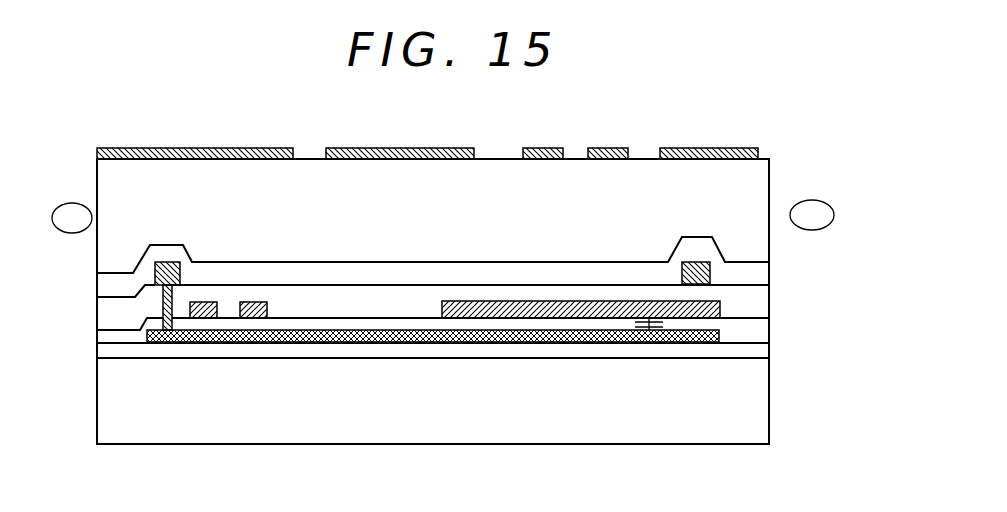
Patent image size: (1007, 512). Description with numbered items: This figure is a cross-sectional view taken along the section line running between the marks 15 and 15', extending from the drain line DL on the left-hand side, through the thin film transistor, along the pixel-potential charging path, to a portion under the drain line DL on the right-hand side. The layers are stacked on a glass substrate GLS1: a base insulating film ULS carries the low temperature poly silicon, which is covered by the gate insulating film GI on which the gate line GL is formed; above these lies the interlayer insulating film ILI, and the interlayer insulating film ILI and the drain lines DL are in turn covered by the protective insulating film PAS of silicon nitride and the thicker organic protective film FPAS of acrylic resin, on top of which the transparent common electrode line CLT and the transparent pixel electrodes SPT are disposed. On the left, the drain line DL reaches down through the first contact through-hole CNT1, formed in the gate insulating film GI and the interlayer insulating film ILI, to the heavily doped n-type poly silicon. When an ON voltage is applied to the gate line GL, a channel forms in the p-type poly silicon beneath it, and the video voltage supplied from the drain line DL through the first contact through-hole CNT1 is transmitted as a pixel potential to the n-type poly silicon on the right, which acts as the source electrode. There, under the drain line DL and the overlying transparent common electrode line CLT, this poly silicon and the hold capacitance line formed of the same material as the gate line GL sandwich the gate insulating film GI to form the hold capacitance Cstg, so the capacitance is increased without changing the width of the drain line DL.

The drain line DL is at (162, 262).
The first contact through-hole CNT1 is at (168, 240).
The gate line GL is at (253, 302).
The transparent common electrode line CLT is at (275, 150).
The transparent pixel electrode SPT is at (403, 148).
The organic protective film FPAS is at (753, 193).
The protective insulating film PAS is at (763, 263).
The interlayer insulating film ILI is at (758, 303).
The gate insulating film GI is at (758, 324).
The base insulating film ULS is at (758, 348).
The glass substrate GLS1 is at (757, 398).
The hold capacitance (capacitance element) Cstg is at (663, 325).
The section line end 15 is at (72, 218).
The section line end 15' is at (812, 215).